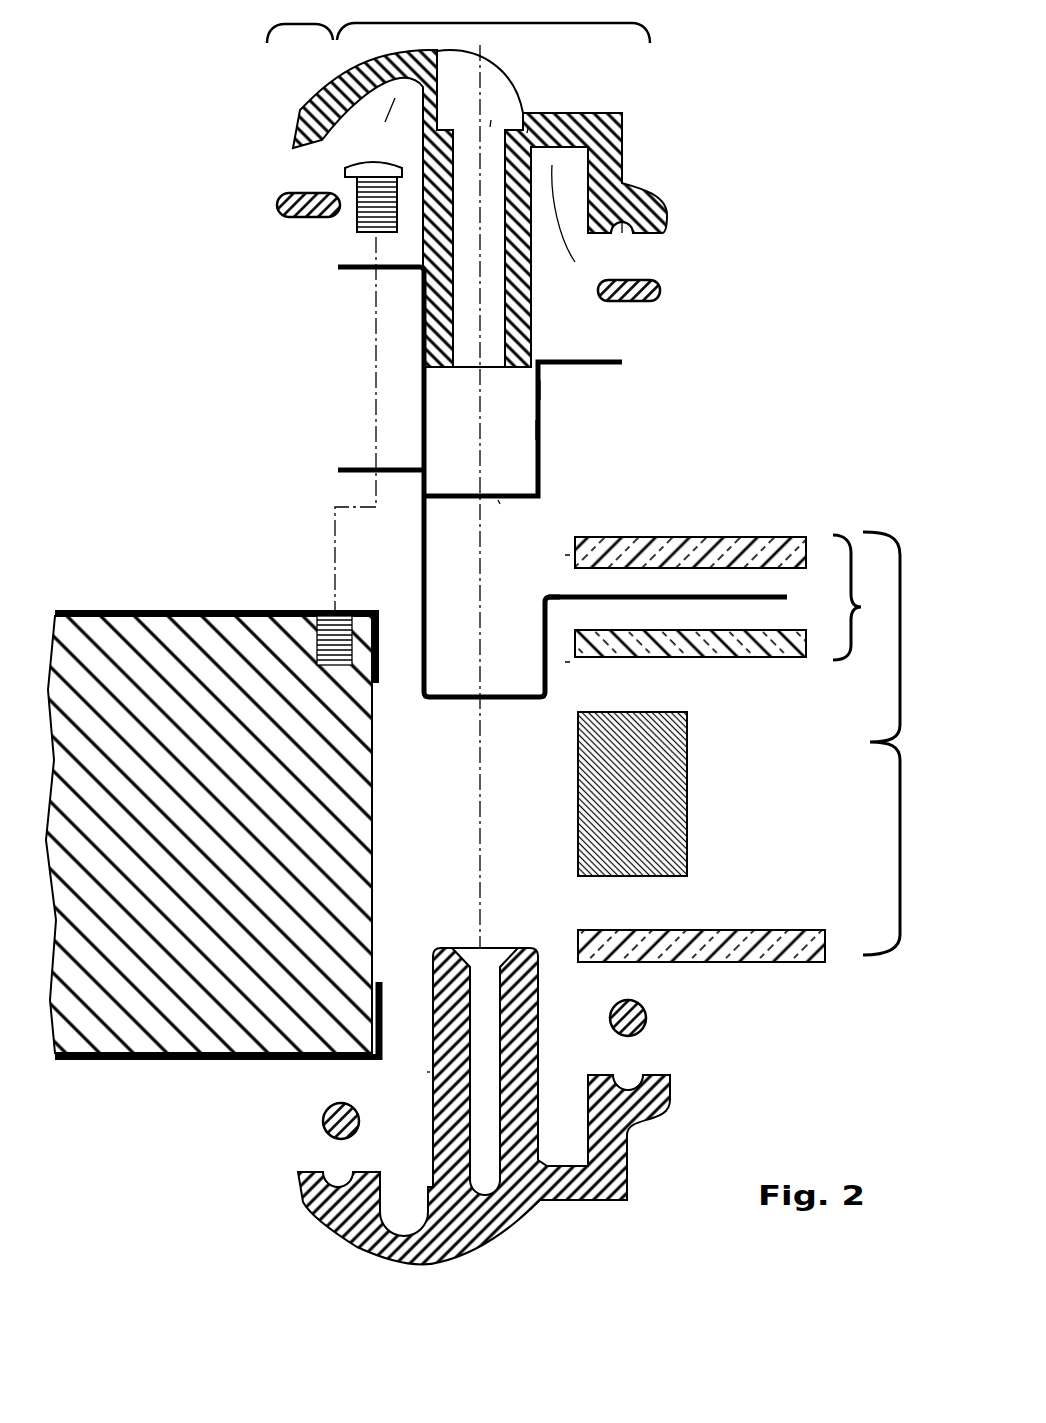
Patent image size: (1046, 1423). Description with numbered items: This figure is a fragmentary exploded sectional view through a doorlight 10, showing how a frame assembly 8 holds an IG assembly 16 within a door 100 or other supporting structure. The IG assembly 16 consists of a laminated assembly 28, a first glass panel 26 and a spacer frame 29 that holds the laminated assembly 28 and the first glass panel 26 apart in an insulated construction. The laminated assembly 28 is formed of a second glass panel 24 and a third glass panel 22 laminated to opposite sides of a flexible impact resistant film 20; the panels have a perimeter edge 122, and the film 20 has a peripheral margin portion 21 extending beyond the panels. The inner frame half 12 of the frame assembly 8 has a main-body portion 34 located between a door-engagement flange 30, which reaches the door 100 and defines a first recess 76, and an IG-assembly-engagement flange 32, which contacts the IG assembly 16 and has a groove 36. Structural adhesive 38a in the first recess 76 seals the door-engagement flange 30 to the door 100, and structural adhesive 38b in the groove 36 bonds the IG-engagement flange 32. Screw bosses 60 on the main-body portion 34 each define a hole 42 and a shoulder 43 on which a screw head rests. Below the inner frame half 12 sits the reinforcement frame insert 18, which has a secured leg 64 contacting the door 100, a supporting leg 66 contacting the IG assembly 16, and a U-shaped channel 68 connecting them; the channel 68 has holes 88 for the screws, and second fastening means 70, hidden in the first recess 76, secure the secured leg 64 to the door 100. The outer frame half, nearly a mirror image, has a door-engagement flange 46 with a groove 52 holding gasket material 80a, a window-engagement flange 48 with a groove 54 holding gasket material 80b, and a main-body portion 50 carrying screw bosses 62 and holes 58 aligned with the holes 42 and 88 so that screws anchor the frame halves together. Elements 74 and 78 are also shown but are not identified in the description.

The frame assembly 8 is at (458, 46).
The doorlight 10 is at (757, 167).
The inner frame half 12 is at (622, 147).
The IG assembly 16 is at (865, 743).
The reinforcement frame insert 18 is at (595, 373).
The flexible impact resistant film 20 is at (745, 591).
The peripheral margin portion 21 is at (422, 695).
The third glass panel 22 is at (750, 537).
The second glass panel 24 is at (750, 660).
The first glass panel 26 is at (806, 964).
The laminated assembly 28 is at (866, 597).
The spacer frame 29 is at (687, 790).
The door-engagement flange 30 is at (297, 132).
The IG-assembly-engagement flange 32 is at (652, 237).
The main-body portion 34 is at (458, 52).
The groove 36 is at (623, 220).
The structural adhesive 38a is at (289, 217).
The structural adhesive 38b is at (640, 301).
The hole 42 is at (490, 127).
The shoulder 43 is at (527, 133).
The door-engagement flange 46 is at (298, 1182).
The window-engagement flange 48 is at (627, 1170).
The main-body portion 50 is at (510, 1222).
The groove 52 is at (343, 1185).
The groove 54 is at (628, 1085).
The hole 58 is at (492, 985).
The screw boss 60 is at (537, 312).
The screw boss 62 is at (427, 1072).
The secured leg 64 is at (338, 267).
The supporting leg 66 is at (545, 380).
The U-shaped channel 68 is at (536, 440).
The second fastening means 70 is at (345, 170).
The clip 74 is at (545, 497).
The first recess 76 is at (382, 124).
The recess 78 is at (577, 225).
The gasket material 80a is at (322, 1110).
The gasket material 80b is at (648, 1015).
The holes 88 is at (498, 500).
The door 100 is at (223, 610).
The perimeter edge 122 is at (567, 555).